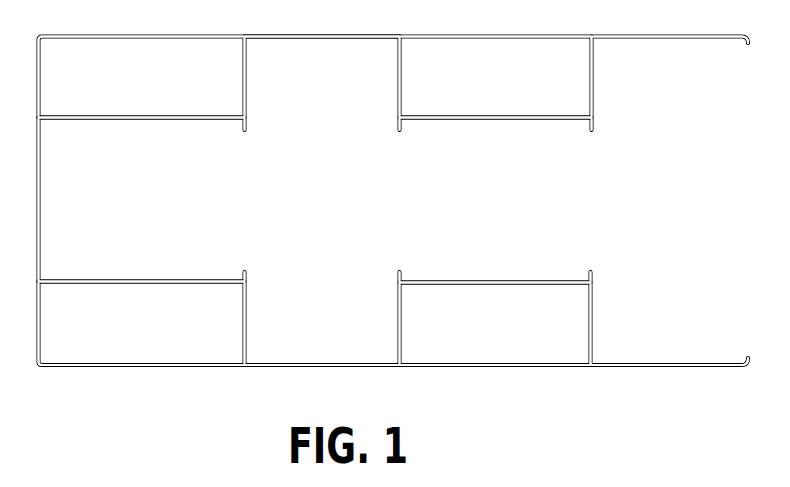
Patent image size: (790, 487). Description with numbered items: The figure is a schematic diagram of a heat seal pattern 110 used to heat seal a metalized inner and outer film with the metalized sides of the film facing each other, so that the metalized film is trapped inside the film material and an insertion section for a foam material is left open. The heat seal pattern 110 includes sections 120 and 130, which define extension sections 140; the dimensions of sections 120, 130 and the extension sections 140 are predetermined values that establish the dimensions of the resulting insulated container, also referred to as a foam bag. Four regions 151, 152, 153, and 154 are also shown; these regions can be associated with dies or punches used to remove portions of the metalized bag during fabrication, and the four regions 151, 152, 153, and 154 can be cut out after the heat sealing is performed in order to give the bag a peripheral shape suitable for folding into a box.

The heat seal pattern 110 is at (593, 275).
The section 120 is at (112, 122).
The section 130 is at (481, 122).
The extension section 140 is at (277, 40).
The region 151 is at (153, 337).
The region 152 is at (515, 334).
The region 153 is at (158, 90).
The region 154 is at (518, 88).